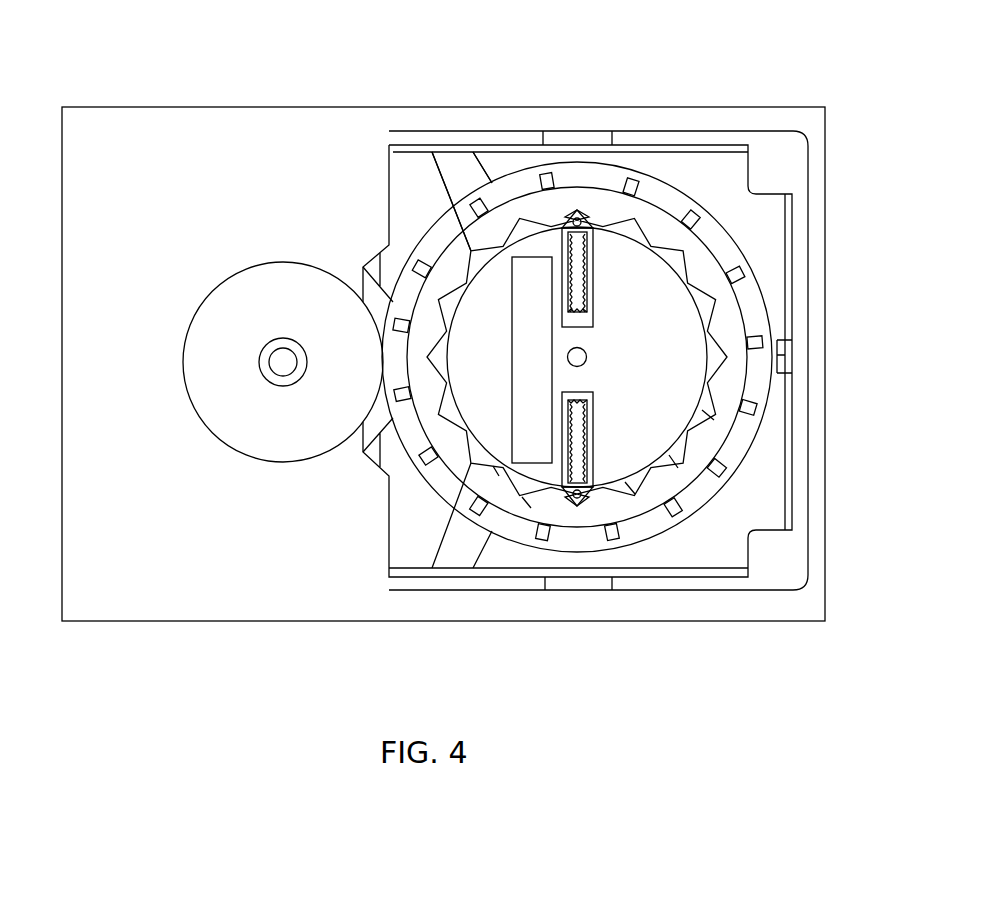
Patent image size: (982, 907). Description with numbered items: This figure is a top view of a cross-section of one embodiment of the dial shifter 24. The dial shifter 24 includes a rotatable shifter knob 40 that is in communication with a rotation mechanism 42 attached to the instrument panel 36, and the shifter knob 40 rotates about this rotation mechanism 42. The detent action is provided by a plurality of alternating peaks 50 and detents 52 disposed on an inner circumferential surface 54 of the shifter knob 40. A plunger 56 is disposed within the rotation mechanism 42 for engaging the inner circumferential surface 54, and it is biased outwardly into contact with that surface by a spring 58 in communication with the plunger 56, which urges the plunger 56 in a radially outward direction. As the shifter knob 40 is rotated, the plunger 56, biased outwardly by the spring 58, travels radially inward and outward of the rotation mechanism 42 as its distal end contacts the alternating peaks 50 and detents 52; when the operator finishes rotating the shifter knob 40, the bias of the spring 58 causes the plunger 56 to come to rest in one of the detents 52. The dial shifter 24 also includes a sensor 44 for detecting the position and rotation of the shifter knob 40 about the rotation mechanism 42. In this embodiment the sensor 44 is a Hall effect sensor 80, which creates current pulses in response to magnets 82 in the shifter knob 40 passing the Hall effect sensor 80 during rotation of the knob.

The instrument panel 36 is at (347, 107).
The shifter knob 40 is at (687, 190).
The dial shifter 24 is at (633, 160).
The magnets 82 is at (425, 258).
The inner circumferential surface 54 is at (458, 208).
The rotation mechanism 42 is at (643, 350).
The plunger 56 is at (578, 212).
The spring 58 is at (597, 237).
The Hall effect sensor 80 is at (289, 448).
The sensor 44 is at (243, 425).
The peaks 50 is at (740, 390).
The detents 52 is at (708, 415).